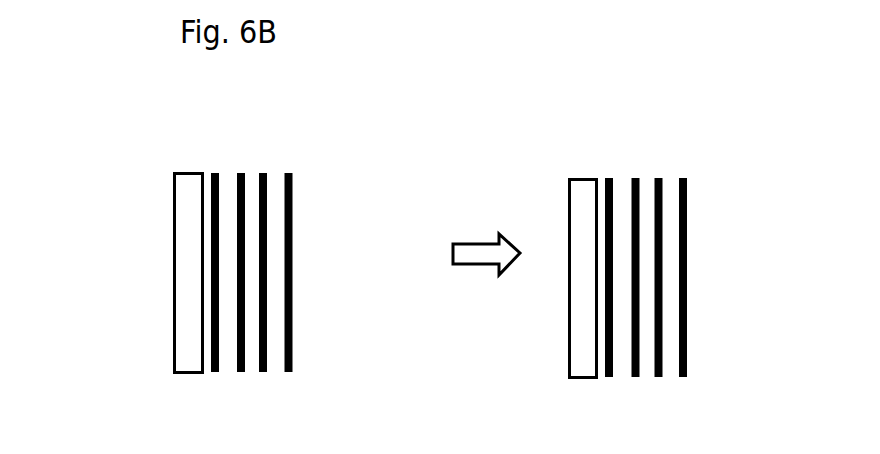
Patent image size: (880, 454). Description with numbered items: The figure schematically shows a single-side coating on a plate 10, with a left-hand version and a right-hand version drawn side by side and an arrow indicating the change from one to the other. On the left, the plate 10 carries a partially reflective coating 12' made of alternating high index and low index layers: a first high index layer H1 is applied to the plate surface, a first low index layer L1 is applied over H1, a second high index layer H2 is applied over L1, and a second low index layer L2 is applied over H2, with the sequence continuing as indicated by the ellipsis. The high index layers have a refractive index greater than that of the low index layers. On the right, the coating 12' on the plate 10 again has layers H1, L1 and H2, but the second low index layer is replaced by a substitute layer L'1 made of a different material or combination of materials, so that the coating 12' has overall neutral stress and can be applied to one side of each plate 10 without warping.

The plate 10 is at (172, 209).
The partially reflective coating 12' is at (495, 253).
The first high index coating layer H1 is at (409, 294).
The first low index coating layer L1 is at (437, 294).
The second high index coating layer H2 is at (461, 294).
The second low index coating layer L2 is at (291, 292).
The substitute low index coating layer L'1 is at (687, 296).